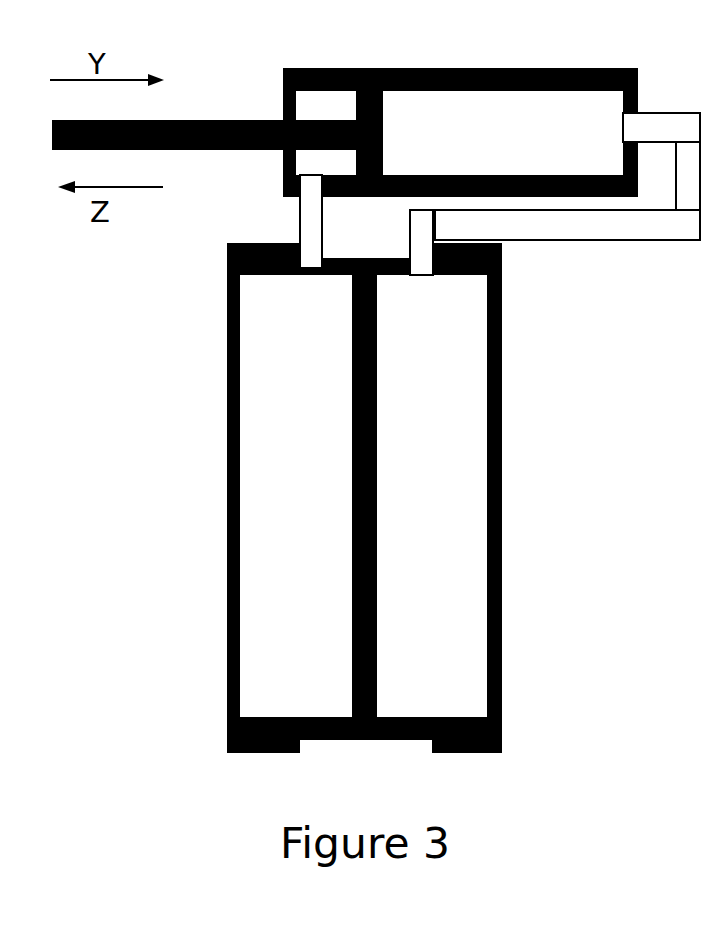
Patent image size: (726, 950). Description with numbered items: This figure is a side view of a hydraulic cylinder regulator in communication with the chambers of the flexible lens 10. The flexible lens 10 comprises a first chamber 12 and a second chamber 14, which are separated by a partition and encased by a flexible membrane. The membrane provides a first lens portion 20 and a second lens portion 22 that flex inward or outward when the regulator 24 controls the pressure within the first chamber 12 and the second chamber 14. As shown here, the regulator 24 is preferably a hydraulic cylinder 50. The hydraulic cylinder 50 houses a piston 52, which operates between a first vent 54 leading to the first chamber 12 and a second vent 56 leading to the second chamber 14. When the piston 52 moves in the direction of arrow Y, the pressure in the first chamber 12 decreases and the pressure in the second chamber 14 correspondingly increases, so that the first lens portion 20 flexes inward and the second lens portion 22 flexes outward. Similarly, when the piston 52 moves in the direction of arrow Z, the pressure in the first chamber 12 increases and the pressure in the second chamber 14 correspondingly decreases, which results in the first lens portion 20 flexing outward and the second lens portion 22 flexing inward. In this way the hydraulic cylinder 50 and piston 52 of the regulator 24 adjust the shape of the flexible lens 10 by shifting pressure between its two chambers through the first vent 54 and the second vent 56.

The flexible lens 10 is at (118, 316).
The first chamber 12 is at (316, 462).
The second chamber 14 is at (446, 462).
The first lens portion 20 is at (225, 645).
The second lens portion 22 is at (503, 652).
The regulator 24 is at (641, 50).
The hydraulic cylinder 50 is at (385, 70).
The piston 52 is at (257, 118).
The first vent 54 is at (307, 226).
The second vent 56 is at (418, 236).